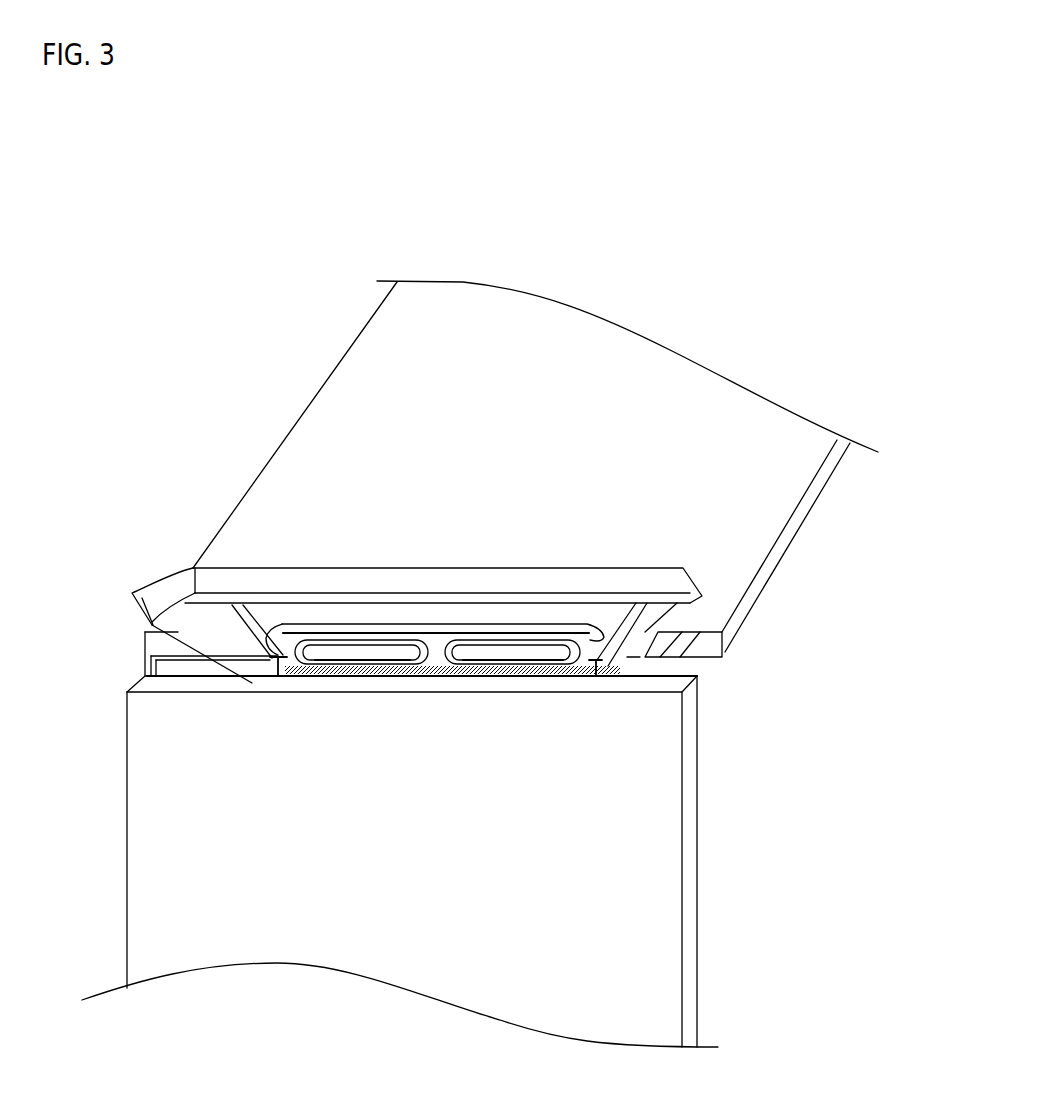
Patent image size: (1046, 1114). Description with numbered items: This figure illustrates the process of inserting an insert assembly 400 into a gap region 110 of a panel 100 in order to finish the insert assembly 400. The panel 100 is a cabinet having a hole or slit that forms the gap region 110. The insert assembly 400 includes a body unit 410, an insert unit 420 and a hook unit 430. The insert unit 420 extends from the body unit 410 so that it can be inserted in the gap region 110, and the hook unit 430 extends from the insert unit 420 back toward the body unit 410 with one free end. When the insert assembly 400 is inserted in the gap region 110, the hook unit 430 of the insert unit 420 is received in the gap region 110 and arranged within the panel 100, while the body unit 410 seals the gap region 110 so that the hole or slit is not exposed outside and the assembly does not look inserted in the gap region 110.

The panel 100 is at (397, 349).
The gap region 110 is at (673, 667).
The insert assembly 400 is at (497, 578).
The body unit 410 is at (597, 585).
The insert unit 420 is at (633, 655).
The hook unit 430 is at (435, 643).